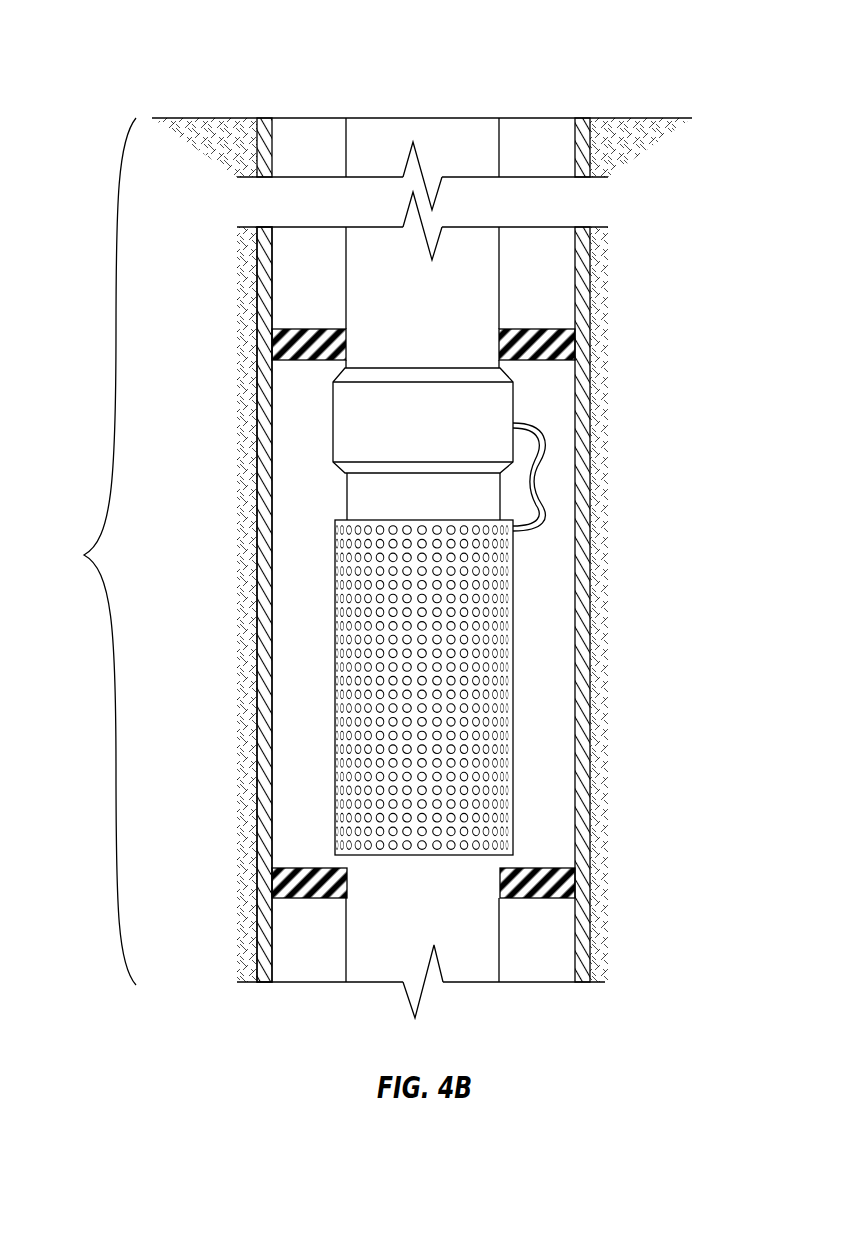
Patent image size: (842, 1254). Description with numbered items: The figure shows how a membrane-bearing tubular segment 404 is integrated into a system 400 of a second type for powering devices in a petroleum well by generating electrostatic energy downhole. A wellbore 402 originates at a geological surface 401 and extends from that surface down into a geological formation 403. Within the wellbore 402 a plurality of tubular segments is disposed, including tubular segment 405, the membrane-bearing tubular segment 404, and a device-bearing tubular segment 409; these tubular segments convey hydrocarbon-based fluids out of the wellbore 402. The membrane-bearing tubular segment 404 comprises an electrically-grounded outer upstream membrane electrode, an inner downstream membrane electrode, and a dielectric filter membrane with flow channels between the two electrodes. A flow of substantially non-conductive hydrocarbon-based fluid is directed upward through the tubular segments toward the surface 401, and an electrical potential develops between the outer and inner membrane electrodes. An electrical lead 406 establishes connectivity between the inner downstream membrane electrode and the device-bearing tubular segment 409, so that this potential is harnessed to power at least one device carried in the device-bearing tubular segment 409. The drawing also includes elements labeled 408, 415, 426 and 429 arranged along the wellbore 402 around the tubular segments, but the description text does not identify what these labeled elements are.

The system 400 is at (176, 55).
The geological surface 401 is at (670, 118).
The wellbore 402 is at (86, 551).
The geological formation 403 is at (608, 292).
The membrane-bearing tubular segment 404 is at (513, 611).
The tubular segment 405 is at (443, 308).
The electrical lead 406 is at (521, 533).
The casing 408 is at (257, 490).
The device-bearing tubular segment 409 is at (443, 433).
The annulus 415 is at (286, 254).
The upper packer 426 is at (292, 329).
The lower packer 429 is at (517, 898).